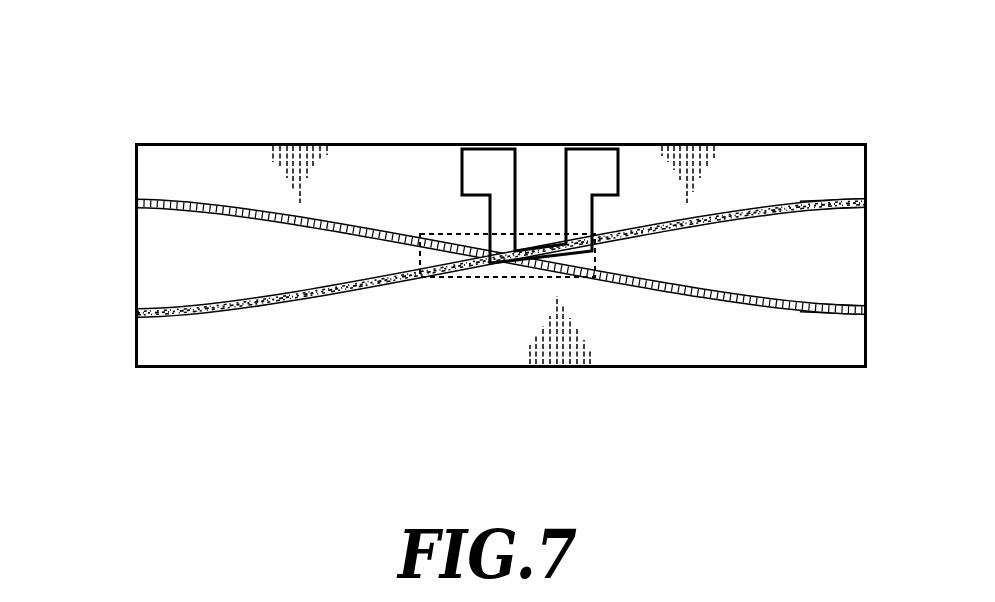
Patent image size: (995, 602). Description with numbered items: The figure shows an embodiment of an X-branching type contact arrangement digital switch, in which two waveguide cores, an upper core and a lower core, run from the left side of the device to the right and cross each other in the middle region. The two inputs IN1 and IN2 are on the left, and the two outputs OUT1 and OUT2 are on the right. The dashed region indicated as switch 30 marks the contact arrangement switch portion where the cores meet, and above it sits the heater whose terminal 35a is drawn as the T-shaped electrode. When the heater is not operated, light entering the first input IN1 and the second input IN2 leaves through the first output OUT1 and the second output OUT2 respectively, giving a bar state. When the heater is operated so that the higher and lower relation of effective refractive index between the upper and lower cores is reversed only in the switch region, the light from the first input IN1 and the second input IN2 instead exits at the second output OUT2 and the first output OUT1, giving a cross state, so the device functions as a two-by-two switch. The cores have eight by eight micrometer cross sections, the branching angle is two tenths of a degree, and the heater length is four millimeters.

The terminal of a heater 35a is at (583, 152).
The switch 30 is at (525, 277).
The In 1 IN1 is at (467, 265).
The In 2 IN2 is at (467, 249).
The Out 1 OUT1 is at (882, 203).
The Out 2 OUT2 is at (882, 313).